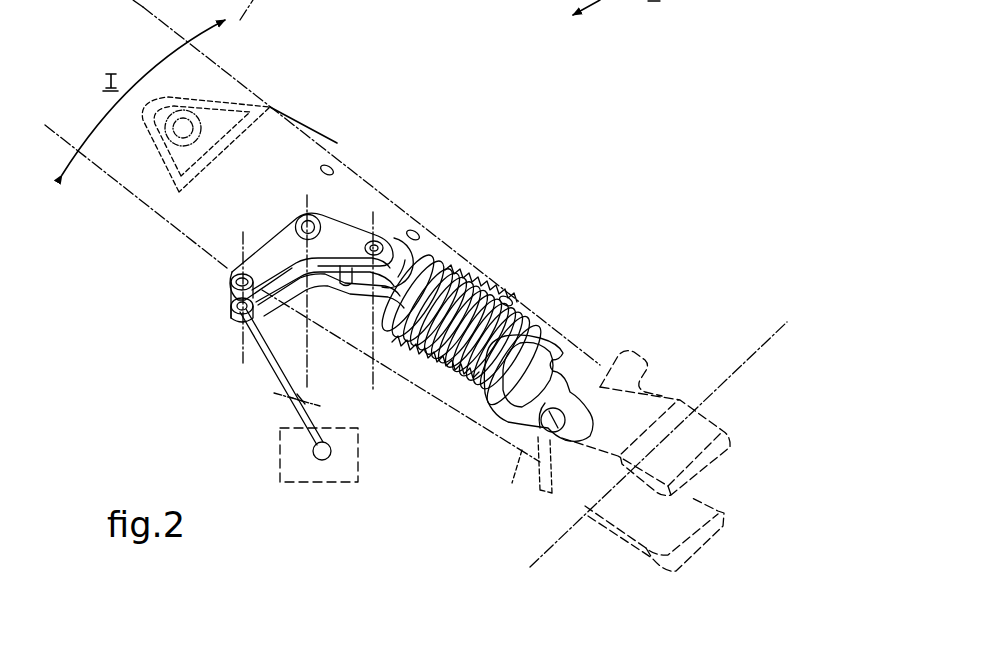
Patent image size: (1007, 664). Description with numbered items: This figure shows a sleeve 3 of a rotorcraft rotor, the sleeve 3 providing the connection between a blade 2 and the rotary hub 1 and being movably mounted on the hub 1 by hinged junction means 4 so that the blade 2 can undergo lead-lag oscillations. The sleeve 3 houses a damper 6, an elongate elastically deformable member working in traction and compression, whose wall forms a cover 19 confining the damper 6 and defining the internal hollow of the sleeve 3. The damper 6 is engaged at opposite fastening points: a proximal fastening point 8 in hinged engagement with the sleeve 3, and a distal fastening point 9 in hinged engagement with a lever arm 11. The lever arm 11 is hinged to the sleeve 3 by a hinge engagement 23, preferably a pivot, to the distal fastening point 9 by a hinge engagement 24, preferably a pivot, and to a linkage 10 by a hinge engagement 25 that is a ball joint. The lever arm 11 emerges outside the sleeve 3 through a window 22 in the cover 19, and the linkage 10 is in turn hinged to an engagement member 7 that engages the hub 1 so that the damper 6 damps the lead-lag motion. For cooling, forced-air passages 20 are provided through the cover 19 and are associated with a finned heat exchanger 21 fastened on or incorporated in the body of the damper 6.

The rotary hub 1 is at (740, 352).
The blade 2 is at (136, 4).
The sleeve 3 is at (477, 230).
The hinged junction means 4 is at (725, 418).
The damper 6 is at (473, 413).
The engagement member 7 is at (280, 472).
The proximal fastening point 8 is at (526, 420).
The distal fastening point 9 is at (343, 287).
The linkage 10 is at (273, 368).
The lever arm 11 is at (272, 233).
The cover 19 is at (358, 157).
The forced-air passages 20 is at (322, 166).
The finned heat exchanger 21 is at (413, 378).
The window 22 is at (228, 258).
The hinge engagement 23 is at (320, 223).
The hinge engagement 24 is at (390, 235).
The hinge engagement 25 is at (233, 307).